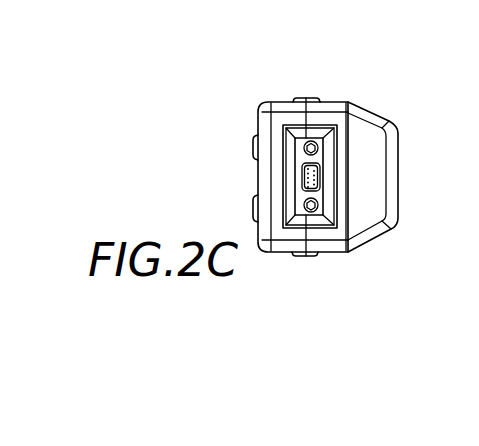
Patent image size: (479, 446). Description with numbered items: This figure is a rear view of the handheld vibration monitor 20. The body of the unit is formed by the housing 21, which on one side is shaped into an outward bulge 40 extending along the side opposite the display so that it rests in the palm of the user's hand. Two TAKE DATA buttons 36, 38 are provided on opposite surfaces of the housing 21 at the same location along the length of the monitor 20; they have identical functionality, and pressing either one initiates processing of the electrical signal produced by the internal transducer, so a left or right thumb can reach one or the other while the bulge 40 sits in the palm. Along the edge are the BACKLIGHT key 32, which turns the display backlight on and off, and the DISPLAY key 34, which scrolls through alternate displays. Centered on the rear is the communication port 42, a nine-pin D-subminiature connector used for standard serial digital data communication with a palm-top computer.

The handheld vibration monitor 20 is at (240, 89).
The housing 21 is at (337, 102).
The BACKLIGHT key 32 is at (256, 142).
The DISPLAY key 34 is at (256, 207).
The TAKE DATA button 36 is at (306, 97).
The TAKE DATA button 38 is at (310, 257).
The outward bulge 40 is at (366, 137).
The communication port 42 is at (320, 176).